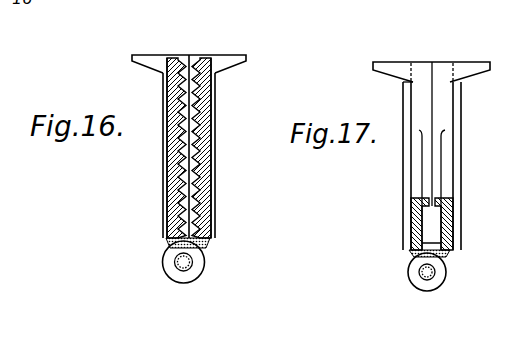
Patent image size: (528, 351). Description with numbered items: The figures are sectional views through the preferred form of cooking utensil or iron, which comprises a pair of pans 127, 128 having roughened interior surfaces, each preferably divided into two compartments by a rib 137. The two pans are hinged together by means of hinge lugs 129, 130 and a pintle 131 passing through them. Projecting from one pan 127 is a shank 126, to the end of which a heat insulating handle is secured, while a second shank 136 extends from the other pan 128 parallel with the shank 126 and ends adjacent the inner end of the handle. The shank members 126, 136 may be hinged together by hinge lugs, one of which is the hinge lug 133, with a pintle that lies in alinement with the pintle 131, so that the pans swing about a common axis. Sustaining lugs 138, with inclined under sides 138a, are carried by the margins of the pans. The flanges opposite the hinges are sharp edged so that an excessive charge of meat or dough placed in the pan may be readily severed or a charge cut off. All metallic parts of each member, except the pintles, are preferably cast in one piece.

In FIG. 17, the shank 126 is at (450, 225).
In FIG. 16, the pan 127 is at (213, 207).
In FIG. 17, the pan 127 is at (453, 165).
In FIG. 16, the pan 128 is at (162, 205).
In FIG. 17, the pan 128 is at (405, 164).
In FIG. 16, the hinge lug 129 is at (197, 263).
In FIG. 17, the hinge lug 129 is at (447, 263).
In FIG. 16, the hinge lug 130 is at (175, 247).
In FIG. 17, the pintle 131 is at (426, 279).
In FIG. 17, the hinge lug 133 is at (411, 266).
In FIG. 17, the shank 136 is at (412, 222).
In FIG. 16, the rib 137 is at (215, 143).
In FIG. 16, the sustaining lug 138 is at (143, 60).
In FIG. 17, the sustaining lug 138 is at (479, 70).
In FIG. 17, the inclined under side 138a is at (415, 77).